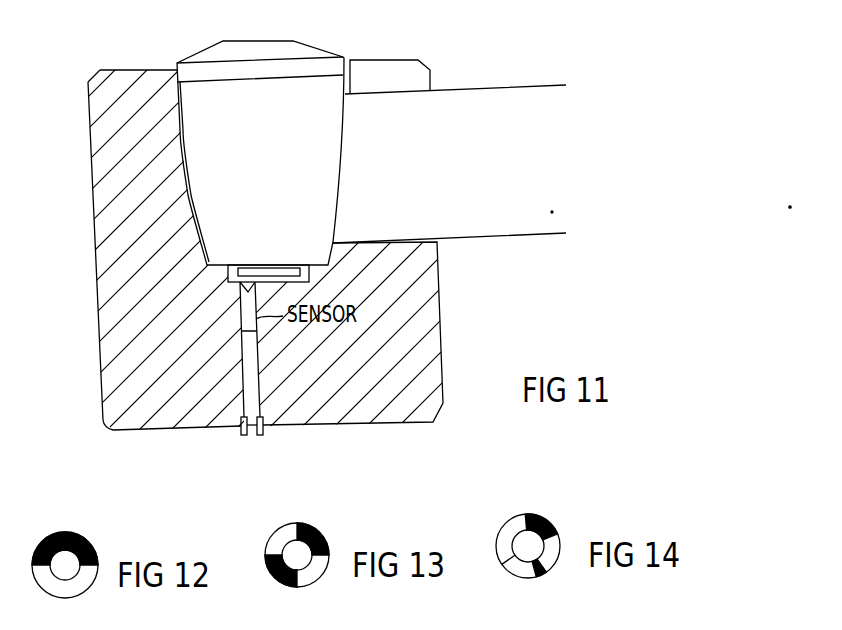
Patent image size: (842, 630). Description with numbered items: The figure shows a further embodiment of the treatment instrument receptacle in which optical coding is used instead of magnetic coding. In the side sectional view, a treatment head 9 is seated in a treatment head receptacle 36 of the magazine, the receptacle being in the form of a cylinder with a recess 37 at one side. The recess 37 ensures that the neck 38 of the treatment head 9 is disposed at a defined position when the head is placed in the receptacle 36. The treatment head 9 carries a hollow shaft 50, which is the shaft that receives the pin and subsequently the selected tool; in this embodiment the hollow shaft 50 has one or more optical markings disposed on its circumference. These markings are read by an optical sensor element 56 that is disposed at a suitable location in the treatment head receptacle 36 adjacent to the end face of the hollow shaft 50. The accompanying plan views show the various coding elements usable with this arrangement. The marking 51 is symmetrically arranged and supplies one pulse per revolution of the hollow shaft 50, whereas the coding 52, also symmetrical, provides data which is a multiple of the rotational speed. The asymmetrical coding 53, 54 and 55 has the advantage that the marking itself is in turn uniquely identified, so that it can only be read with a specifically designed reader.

In FIG. 11, the treatment head 9 is at (250, 52).
In FIG. 11, the treatment head receptacle 36 is at (122, 85).
In FIG. 11, the recess 37 is at (387, 73).
In FIG. 11, the neck 38 is at (465, 122).
In FIG. 11, the hollow shaft 50 is at (278, 269).
In FIG. 11, the optical sensor element 56 is at (244, 308).
In FIG. 12, the optical marking 51 is at (73, 531).
In FIG. 13, the coding 52 is at (310, 523).
In FIG. 14, the asymmetrical coding marking 53 is at (535, 513).
In FIG. 14, the asymmetrical coding marking 54 is at (547, 571).
In FIG. 14, the asymmetrical coding marking 55 is at (503, 562).